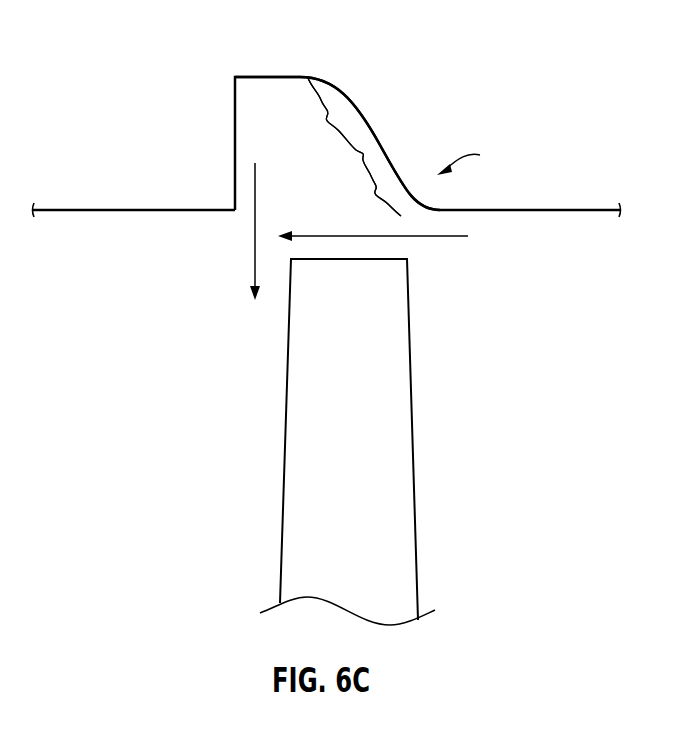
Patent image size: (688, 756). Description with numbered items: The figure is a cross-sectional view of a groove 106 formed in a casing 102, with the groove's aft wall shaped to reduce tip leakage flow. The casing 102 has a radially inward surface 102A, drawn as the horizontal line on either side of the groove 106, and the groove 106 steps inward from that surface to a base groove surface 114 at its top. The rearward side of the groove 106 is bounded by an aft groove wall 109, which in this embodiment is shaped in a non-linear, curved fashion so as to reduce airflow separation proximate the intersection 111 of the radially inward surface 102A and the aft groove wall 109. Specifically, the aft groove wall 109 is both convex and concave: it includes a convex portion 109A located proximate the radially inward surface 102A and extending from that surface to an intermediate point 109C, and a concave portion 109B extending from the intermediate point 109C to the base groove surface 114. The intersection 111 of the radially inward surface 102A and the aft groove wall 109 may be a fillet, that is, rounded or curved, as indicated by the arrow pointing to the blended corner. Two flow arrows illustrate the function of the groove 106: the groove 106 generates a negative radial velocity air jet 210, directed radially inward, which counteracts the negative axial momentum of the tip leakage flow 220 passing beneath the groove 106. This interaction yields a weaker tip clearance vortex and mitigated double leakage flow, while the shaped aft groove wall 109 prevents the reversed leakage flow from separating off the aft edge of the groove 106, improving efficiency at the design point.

The casing 102 is at (93, 208).
The radially inward surface 102A is at (568, 211).
The groove 106 is at (255, 75).
The base groove surface 114 is at (287, 75).
The aft groove wall 109 is at (345, 90).
The convex portion 109A is at (354, 147).
The concave portion 109B is at (334, 147).
The intermediate point 109C is at (373, 135).
The intersection 111 is at (479, 157).
The negative radial velocity air jet 210 is at (252, 237).
The tip leakage flow 220 is at (437, 237).